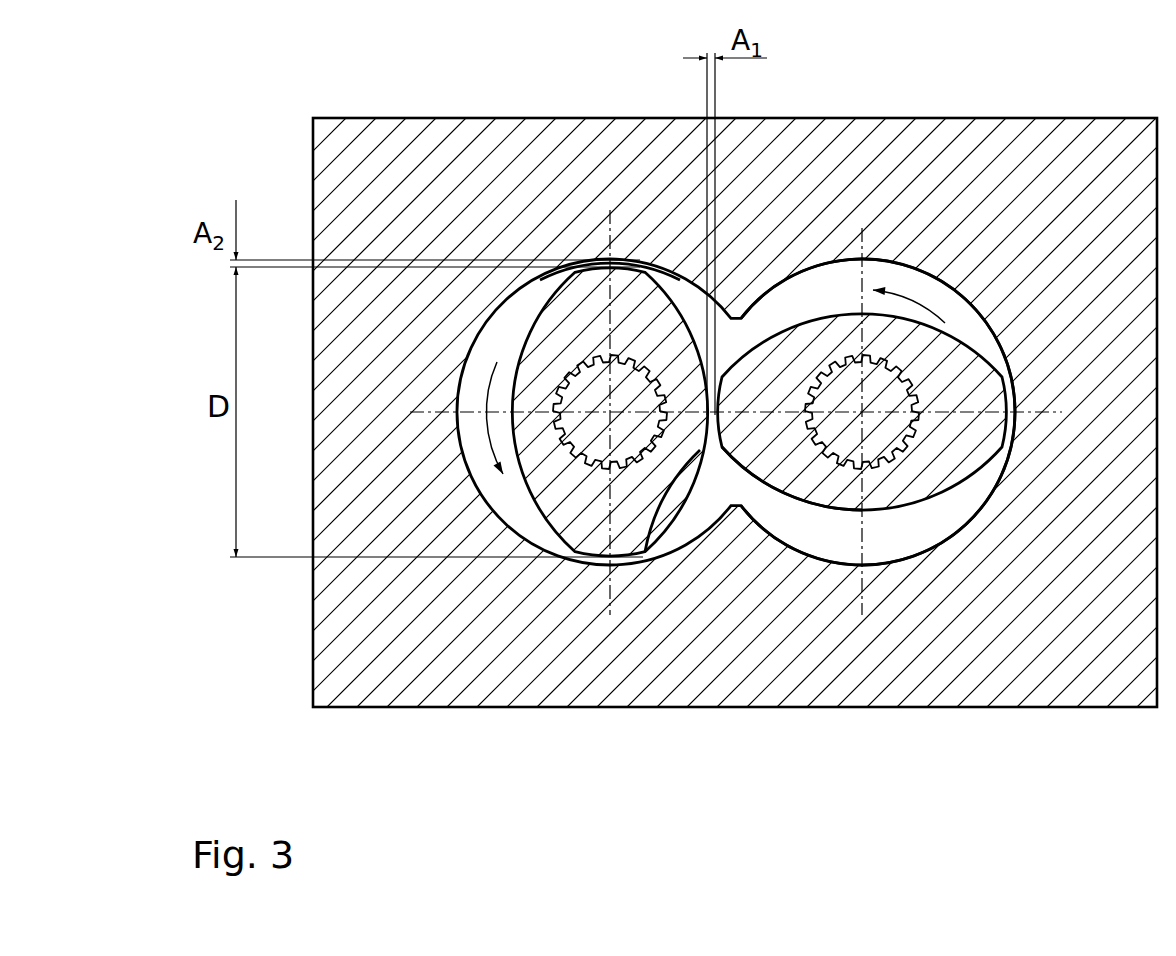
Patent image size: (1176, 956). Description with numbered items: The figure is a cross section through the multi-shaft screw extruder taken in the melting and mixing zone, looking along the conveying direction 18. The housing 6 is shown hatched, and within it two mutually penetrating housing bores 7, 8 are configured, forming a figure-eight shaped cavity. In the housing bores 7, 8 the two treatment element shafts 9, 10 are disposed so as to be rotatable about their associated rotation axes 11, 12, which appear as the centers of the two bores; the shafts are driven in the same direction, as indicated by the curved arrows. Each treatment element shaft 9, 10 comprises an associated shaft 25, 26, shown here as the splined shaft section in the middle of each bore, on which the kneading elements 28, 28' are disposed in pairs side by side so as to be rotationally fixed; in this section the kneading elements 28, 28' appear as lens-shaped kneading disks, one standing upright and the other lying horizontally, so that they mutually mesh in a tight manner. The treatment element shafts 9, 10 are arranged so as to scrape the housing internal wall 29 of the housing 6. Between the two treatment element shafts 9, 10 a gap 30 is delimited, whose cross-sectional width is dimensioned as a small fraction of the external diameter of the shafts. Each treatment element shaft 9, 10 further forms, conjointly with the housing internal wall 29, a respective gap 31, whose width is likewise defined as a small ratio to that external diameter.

The housing 6 is at (780, 117).
The housing bore 7 is at (521, 307).
The housing bore 8 is at (841, 277).
The treatment element shaft 9 is at (543, 518).
The treatment element shaft 10 is at (868, 523).
The rotation axis 11 is at (585, 462).
The rotation axis 12 is at (900, 433).
The conveying direction 18 is at (438, 96).
The shaft 25 is at (618, 455).
The shaft 26 is at (907, 460).
The kneading element 28 is at (683, 636).
The kneading element 28' is at (792, 634).
The housing internal wall 29 is at (987, 330).
The gap 30 is at (713, 417).
The gap 31 is at (615, 262).